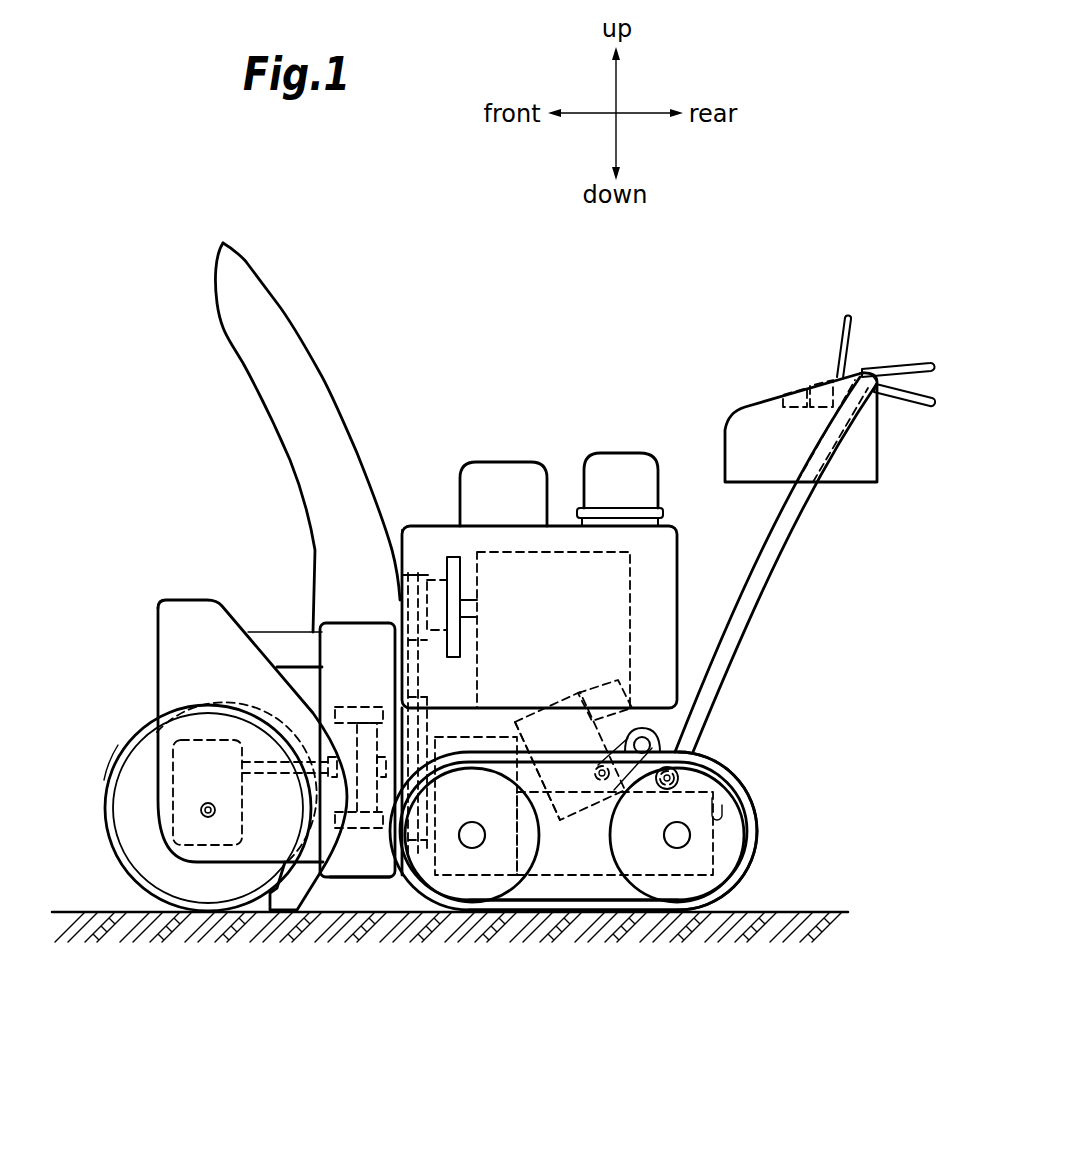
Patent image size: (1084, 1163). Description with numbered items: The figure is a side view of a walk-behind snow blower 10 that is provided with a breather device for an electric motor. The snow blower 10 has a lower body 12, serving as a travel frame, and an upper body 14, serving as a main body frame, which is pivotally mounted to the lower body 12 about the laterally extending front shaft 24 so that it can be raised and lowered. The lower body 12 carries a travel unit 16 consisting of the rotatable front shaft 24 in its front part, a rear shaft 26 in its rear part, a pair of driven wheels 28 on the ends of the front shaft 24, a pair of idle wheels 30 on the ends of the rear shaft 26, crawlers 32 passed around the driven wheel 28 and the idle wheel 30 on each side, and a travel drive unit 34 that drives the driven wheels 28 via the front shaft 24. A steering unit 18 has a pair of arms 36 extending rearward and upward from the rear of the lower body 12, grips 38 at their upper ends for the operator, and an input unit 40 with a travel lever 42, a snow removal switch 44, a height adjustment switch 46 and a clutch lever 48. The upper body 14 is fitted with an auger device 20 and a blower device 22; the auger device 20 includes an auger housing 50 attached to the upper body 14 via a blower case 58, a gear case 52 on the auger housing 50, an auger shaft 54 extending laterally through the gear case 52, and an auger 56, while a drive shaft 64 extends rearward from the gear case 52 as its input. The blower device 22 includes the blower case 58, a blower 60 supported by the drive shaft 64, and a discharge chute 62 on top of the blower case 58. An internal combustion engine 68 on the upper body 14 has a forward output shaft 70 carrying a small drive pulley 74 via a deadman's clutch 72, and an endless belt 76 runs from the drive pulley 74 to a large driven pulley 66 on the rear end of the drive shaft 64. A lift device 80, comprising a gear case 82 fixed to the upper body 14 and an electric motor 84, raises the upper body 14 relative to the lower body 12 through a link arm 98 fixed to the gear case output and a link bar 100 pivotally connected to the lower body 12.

The snow blower 10 is at (150, 255).
The lower body 12 is at (585, 862).
The upper body 14 is at (682, 610).
The travel unit 16 is at (748, 896).
The steering unit 18 is at (752, 360).
The auger device 20 is at (155, 585).
The blower device 22 is at (323, 657).
The front shaft 24 is at (473, 848).
The rear shaft 26 is at (676, 848).
The driven wheel 28 is at (448, 900).
The idle wheel 30 is at (693, 908).
The crawler 32 is at (755, 832).
The travel drive unit 34 is at (492, 737).
The arm 36 is at (795, 532).
The grip 38 is at (925, 410).
The input unit 40 is at (758, 441).
The travel lever 42 is at (842, 315).
The snow removal switch 44 is at (820, 378).
The height adjustment switch 46 is at (795, 392).
The clutch lever 48 is at (920, 362).
The auger housing 50 is at (157, 802).
The gear case 52 is at (203, 740).
The auger shaft 54 is at (208, 818).
The auger 56 is at (112, 765).
The blower case 58 is at (362, 868).
The blower 60 is at (335, 685).
The discharge chute 62 is at (303, 348).
The drive shaft 64 is at (258, 775).
The driven pulley 66 is at (423, 855).
The internal combustion engine 68 is at (562, 552).
The output shaft 70 is at (465, 597).
The deadman's clutch 72 is at (440, 573).
The drive pulley 74 is at (407, 528).
The endless belt 76 is at (412, 675).
The lift device 80 is at (580, 675).
The gear case 82 is at (575, 810).
The electric motor 84 is at (605, 690).
The link arm 98 is at (636, 817).
The link bar 100 is at (655, 740).